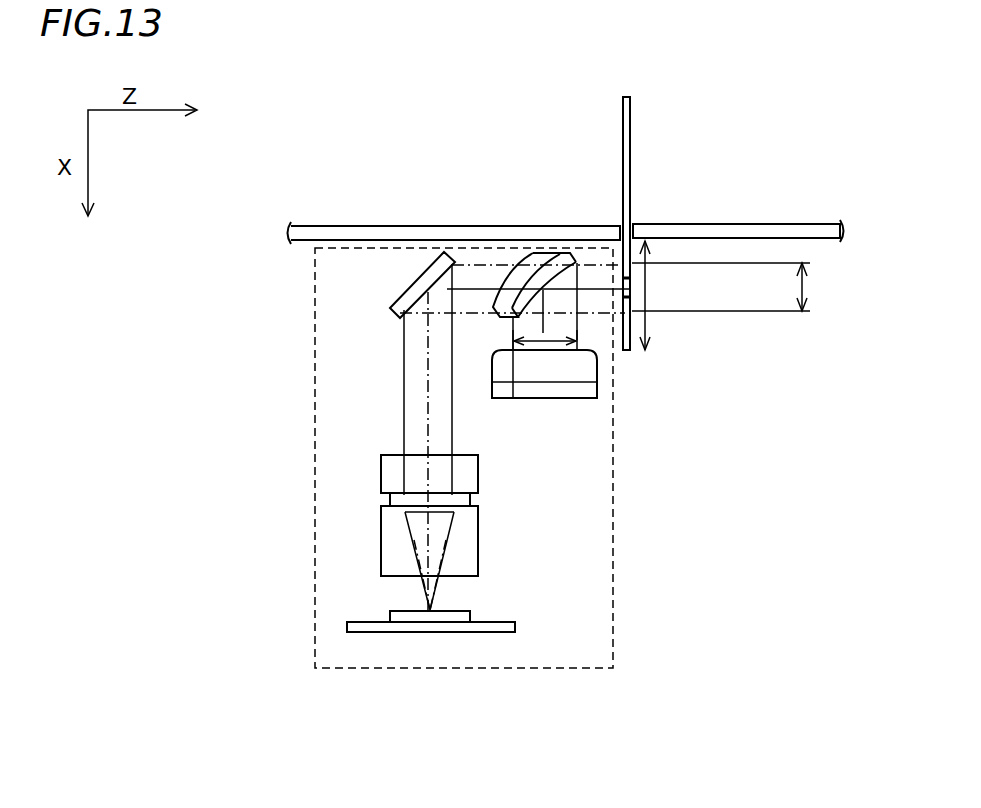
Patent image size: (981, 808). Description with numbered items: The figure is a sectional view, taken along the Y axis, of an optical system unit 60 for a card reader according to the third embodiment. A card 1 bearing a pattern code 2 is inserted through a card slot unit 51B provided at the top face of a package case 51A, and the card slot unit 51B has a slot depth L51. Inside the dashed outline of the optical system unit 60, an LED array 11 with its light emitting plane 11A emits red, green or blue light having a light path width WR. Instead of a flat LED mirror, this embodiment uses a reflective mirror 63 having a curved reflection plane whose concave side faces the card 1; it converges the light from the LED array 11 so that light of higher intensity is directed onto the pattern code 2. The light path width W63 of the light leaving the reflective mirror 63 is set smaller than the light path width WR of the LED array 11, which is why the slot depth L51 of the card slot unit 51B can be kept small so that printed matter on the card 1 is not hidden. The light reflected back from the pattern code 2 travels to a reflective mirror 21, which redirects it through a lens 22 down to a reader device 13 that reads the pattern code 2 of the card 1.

The card 1 is at (622, 115).
The pattern code 2 is at (630, 292).
The LED array 11 is at (597, 388).
The light emitting plane 11A is at (558, 351).
The reader device 13 is at (347, 627).
The reflective mirror 21 is at (398, 300).
The lens 22 is at (381, 477).
The package case 51A is at (750, 222).
The card slot unit 51B is at (633, 230).
The optical system unit 60 is at (615, 572).
The reflective mirror 63 is at (530, 252).
The light path width WR is at (556, 334).
The slot depth L51 is at (648, 328).
The light path width W63 is at (829, 287).